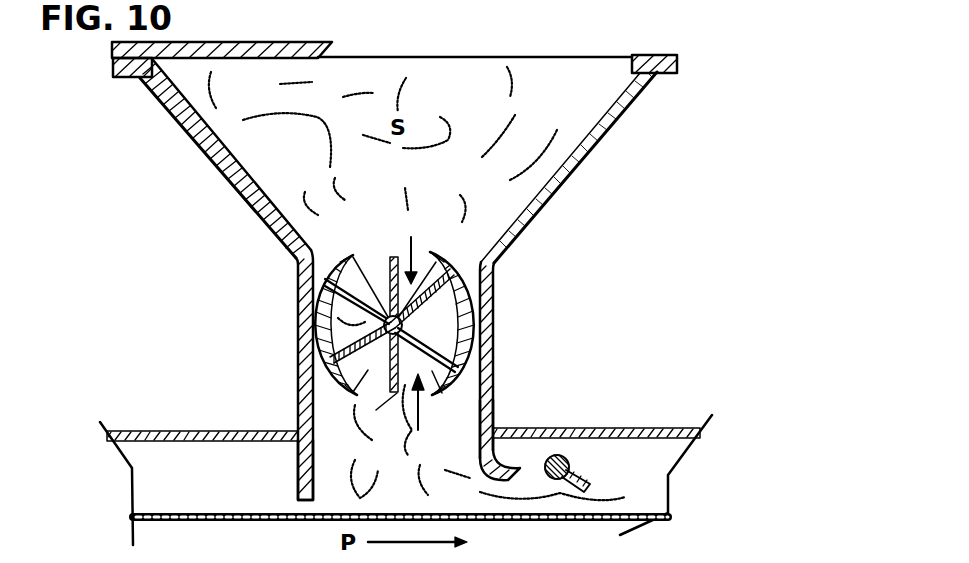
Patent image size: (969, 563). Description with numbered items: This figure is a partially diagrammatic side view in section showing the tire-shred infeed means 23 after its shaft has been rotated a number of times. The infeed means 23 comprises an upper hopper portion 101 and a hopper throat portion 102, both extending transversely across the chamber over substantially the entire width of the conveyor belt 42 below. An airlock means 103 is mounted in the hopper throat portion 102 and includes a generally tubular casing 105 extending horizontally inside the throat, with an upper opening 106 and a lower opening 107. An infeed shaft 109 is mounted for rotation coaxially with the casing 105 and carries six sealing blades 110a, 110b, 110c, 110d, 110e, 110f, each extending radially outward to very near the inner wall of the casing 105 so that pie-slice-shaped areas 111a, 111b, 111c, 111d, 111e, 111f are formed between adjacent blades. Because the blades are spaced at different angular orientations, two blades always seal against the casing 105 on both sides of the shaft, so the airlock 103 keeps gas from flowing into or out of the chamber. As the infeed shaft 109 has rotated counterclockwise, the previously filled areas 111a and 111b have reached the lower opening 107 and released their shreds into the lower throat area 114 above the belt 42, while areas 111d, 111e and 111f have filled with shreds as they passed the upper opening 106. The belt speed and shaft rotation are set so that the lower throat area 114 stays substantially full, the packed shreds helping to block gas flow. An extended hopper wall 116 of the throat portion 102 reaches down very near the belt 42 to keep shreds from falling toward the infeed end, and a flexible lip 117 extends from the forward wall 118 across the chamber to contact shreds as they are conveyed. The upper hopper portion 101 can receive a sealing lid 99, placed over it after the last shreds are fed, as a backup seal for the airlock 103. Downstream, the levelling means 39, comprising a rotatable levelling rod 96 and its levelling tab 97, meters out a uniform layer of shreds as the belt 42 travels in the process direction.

The tire-shred infeed means 23 is at (606, 44).
The levelling means 39 is at (610, 416).
The conveyor belt 42 is at (226, 514).
The levelling rod 96 is at (566, 459).
The levelling tab 97 is at (589, 484).
The sealing lid 99 is at (252, 42).
The upper hopper portion 101 is at (180, 128).
The hopper throat portion 102 is at (297, 266).
The airlock means 103 is at (508, 318).
The tubular casing 105 is at (490, 252).
The upper opening 106 is at (425, 248).
The lower opening 107 is at (438, 408).
The infeed shaft 109 is at (363, 256).
The sealing blade 110a is at (338, 360).
The sealing blade 110b is at (372, 412).
The sealing blade 110c is at (437, 372).
The sealing blade 110d is at (450, 302).
The sealing blade 110e is at (393, 256).
The sealing blade 110f is at (333, 322).
The pie-slice-shaped area 111a is at (355, 393).
The pie-slice-shaped area 111b is at (435, 388).
The pie-slice-shaped area 111c is at (447, 332).
The pie-slice-shaped area 111d is at (445, 273).
The pie-slice-shaped area 111e is at (348, 281).
The pie-slice-shaped area 111f is at (345, 337).
The lower throat area 114 is at (410, 463).
The extended hopper wall 116 is at (300, 471).
The lip 117 is at (502, 475).
The forward wall 118 is at (493, 413).